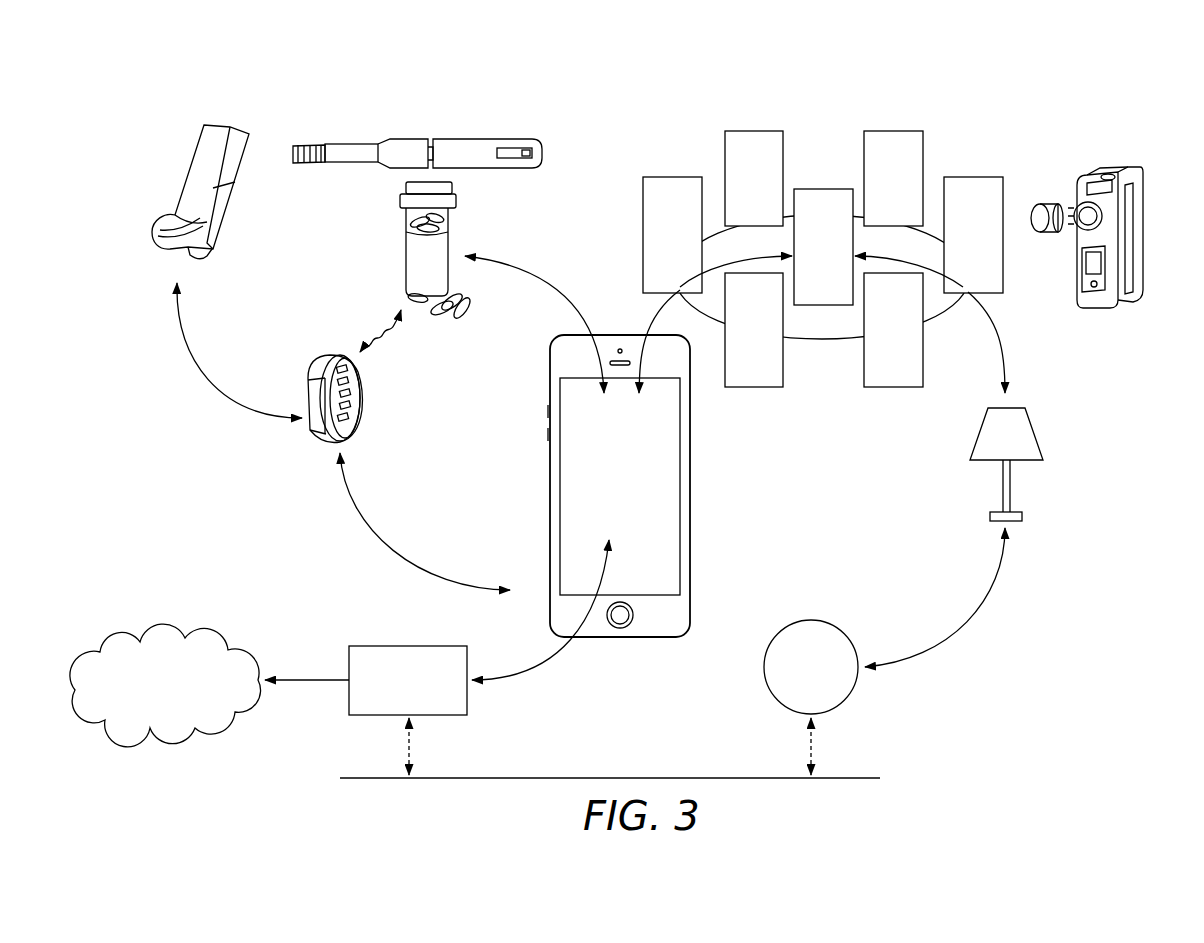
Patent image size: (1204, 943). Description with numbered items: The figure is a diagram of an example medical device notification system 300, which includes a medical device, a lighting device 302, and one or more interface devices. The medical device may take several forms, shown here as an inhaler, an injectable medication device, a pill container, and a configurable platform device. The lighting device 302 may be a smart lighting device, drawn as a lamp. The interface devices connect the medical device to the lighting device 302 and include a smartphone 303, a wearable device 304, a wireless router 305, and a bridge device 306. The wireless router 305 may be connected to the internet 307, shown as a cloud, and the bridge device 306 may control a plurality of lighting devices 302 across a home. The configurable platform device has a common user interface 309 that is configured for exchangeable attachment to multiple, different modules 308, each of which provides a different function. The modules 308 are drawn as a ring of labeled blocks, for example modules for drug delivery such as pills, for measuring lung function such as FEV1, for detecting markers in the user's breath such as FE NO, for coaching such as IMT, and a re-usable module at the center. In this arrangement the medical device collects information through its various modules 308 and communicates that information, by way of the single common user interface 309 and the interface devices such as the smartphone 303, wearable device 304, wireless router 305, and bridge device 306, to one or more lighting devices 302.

The system 300 is at (586, 92).
The lighting device 302 is at (1011, 483).
The smartphone 303 is at (691, 485).
The wearable device 304 is at (357, 412).
The wireless router 305 is at (407, 646).
The bridge device 306 is at (763, 667).
The internet 307 is at (220, 631).
The modules 308 is at (752, 126).
The common user interface 309 is at (1146, 232).